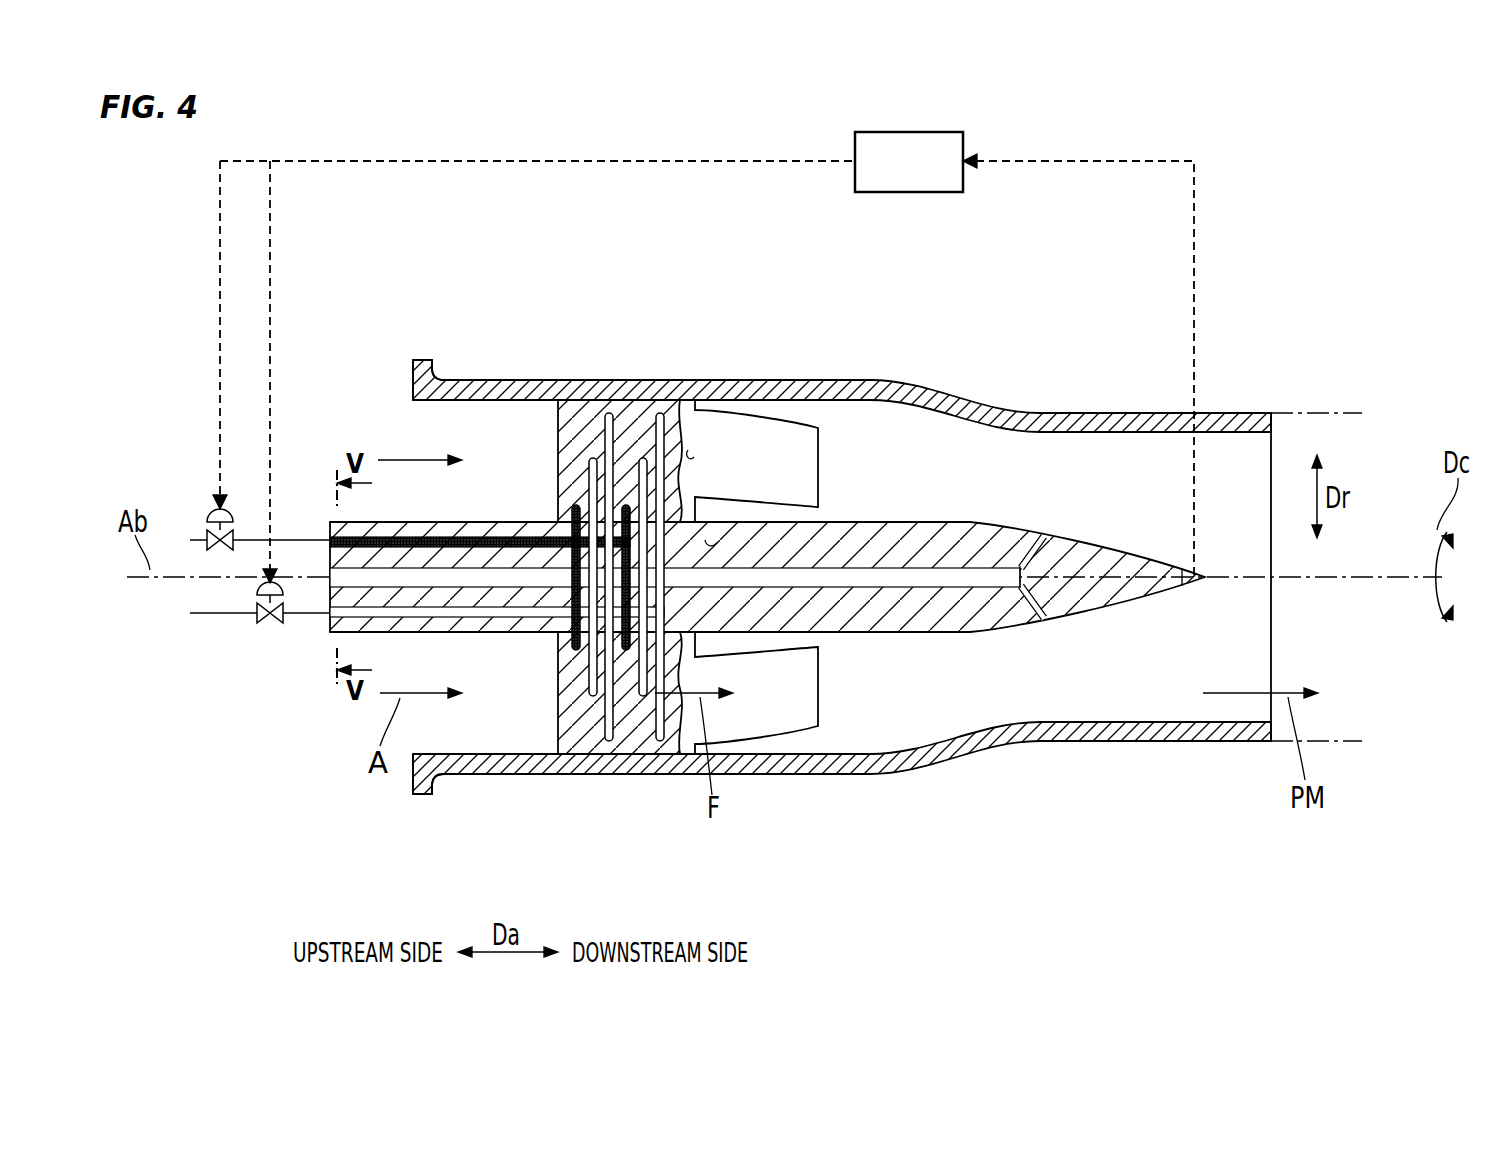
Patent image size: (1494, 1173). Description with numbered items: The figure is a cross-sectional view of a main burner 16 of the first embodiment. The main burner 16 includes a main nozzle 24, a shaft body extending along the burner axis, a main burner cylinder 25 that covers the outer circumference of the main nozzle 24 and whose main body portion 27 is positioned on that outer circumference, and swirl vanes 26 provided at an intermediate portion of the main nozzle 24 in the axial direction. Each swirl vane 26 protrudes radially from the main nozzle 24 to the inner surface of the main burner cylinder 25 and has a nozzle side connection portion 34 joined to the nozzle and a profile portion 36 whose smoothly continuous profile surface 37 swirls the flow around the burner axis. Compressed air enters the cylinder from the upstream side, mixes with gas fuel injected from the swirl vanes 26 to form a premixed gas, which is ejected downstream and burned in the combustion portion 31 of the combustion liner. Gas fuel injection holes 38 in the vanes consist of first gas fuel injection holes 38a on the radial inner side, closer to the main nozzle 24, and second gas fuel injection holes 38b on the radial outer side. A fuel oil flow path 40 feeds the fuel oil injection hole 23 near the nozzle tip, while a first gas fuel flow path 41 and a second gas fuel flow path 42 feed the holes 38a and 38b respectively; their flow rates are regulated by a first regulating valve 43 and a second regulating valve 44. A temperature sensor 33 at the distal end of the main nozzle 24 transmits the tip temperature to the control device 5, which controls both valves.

The control device 5 is at (912, 132).
The main burner 16 is at (416, 328).
The fuel oil injection hole 23 is at (712, 578).
The main nozzle 24 is at (712, 578).
The main burner cylinder 25 is at (842, 553).
The swirl vane 26 is at (828, 418).
The main body portion 27 is at (1088, 413).
The combustion portion 31 is at (1325, 413).
The temperature sensor 33 is at (1195, 585).
The nozzle side connection portion 34 is at (717, 543).
The profile portion 36 is at (746, 357).
The profile surface 37 is at (688, 450).
The gas fuel injection holes 38 is at (580, 553).
The first gas fuel injection holes 38a is at (626, 504).
The second gas fuel injection holes 38b is at (609, 412).
The fuel oil flow path 40 is at (909, 575).
The first gas fuel flow path 41 is at (410, 540).
The second gas fuel flow path 42 is at (493, 617).
The first regulating valve 43 is at (210, 528).
The second regulating valve 44 is at (267, 624).